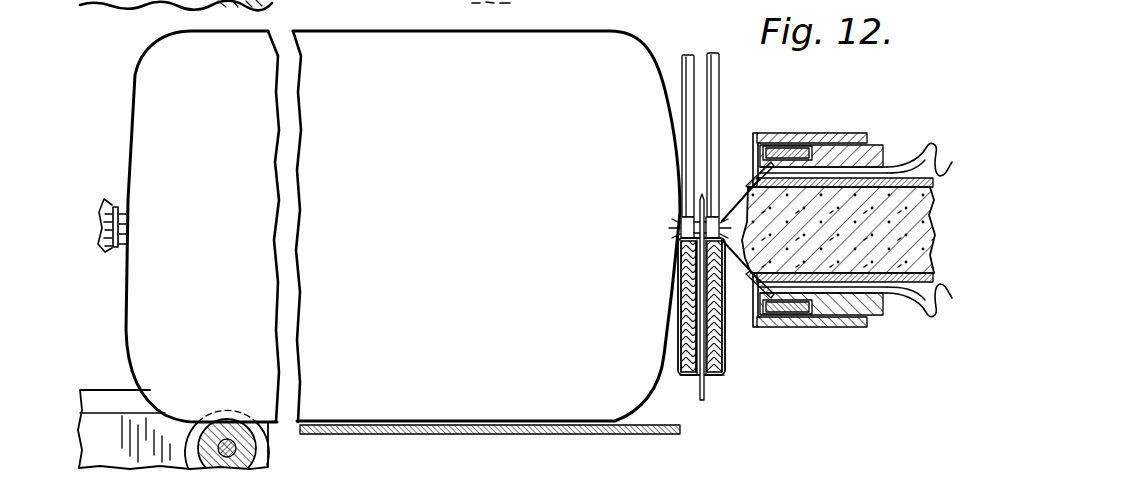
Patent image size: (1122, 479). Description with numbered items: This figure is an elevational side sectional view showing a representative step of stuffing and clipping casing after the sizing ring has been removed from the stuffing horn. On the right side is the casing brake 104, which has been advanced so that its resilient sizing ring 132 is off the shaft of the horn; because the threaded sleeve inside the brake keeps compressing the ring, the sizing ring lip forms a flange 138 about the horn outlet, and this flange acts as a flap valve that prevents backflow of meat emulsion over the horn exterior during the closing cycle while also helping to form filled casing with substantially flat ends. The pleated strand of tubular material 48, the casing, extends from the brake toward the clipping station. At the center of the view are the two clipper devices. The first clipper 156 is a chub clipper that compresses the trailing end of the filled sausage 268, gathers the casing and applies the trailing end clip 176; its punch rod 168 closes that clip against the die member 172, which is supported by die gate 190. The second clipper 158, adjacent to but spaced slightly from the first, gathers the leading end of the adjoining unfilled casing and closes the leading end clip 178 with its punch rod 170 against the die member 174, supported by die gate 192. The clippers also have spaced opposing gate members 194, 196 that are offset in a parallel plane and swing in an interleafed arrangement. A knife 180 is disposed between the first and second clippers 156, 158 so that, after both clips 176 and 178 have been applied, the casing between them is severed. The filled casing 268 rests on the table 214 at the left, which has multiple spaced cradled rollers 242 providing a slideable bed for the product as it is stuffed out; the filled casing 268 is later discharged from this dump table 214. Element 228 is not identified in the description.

The filled sausage 268 is at (257, 110).
The bottom plate 228 is at (440, 434).
The table 214 is at (74, 432).
The cradled rollers 242 is at (240, 408).
The leading end clip 178 is at (125, 231).
The punch rod 168 is at (683, 56).
The punch rod 170 is at (719, 62).
The trailing end clip 176 is at (683, 223).
The first clipper 156 is at (665, 358).
The die member 172 is at (680, 250).
The die member 174 is at (703, 262).
The gate member 194 is at (690, 300).
The die gate 190 is at (690, 322).
The gate member 196 is at (728, 333).
The die gate 192 is at (728, 358).
The second clipper 158 is at (735, 380).
The knife 180 is at (704, 400).
The casing brake 104 is at (869, 120).
The sizing ring 132 is at (771, 158).
The flange 138 is at (750, 183).
The pleated strand of tubular material 48 is at (938, 148).